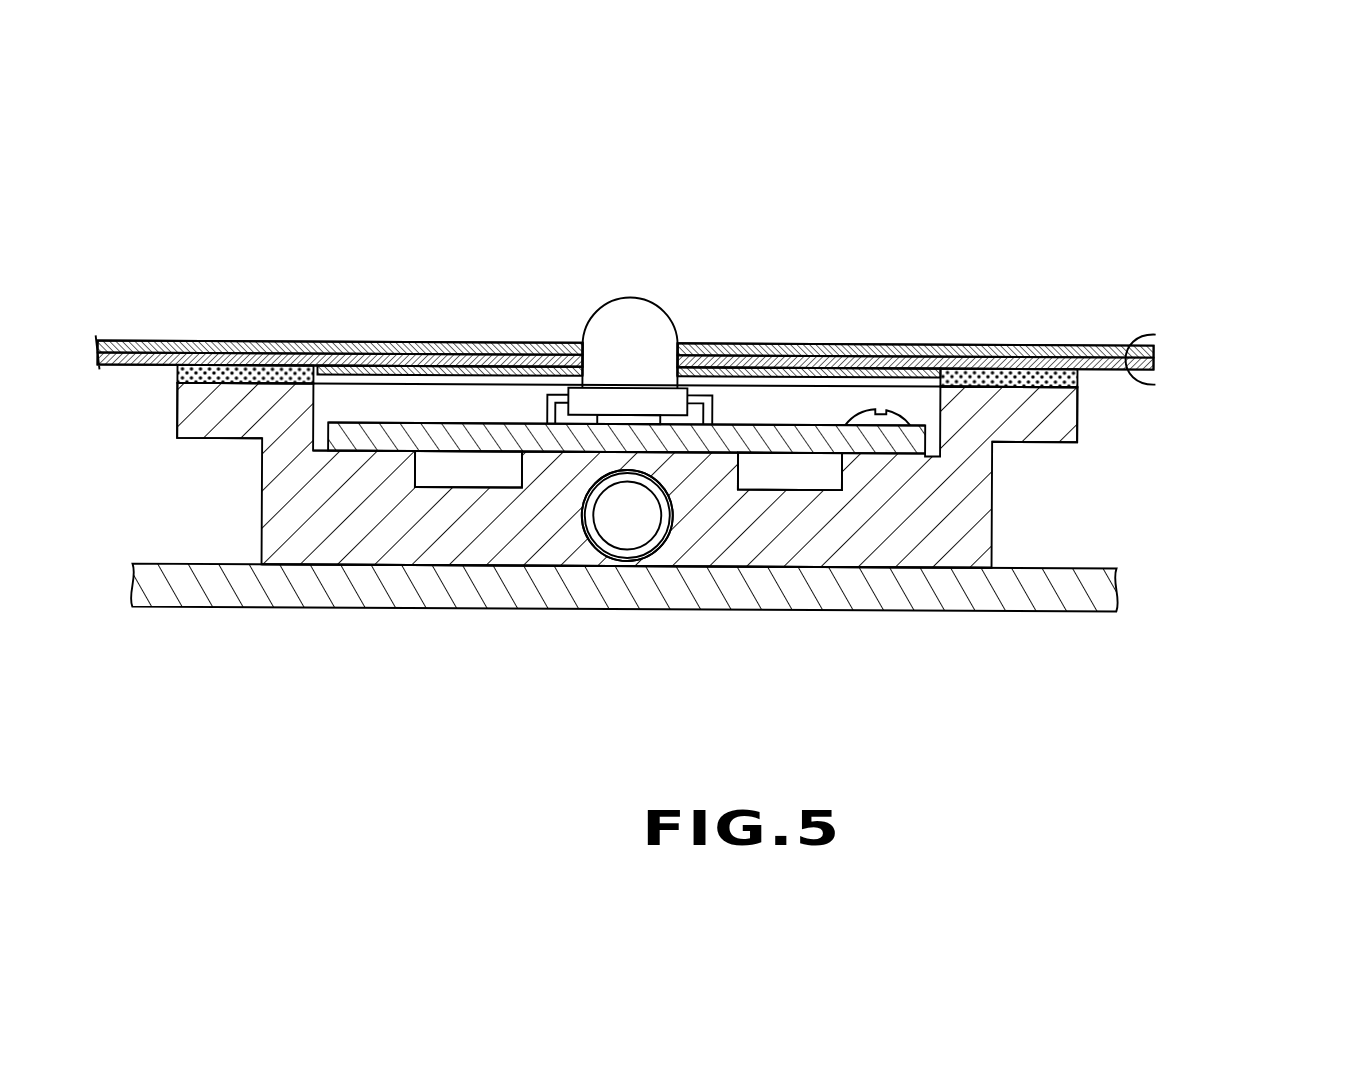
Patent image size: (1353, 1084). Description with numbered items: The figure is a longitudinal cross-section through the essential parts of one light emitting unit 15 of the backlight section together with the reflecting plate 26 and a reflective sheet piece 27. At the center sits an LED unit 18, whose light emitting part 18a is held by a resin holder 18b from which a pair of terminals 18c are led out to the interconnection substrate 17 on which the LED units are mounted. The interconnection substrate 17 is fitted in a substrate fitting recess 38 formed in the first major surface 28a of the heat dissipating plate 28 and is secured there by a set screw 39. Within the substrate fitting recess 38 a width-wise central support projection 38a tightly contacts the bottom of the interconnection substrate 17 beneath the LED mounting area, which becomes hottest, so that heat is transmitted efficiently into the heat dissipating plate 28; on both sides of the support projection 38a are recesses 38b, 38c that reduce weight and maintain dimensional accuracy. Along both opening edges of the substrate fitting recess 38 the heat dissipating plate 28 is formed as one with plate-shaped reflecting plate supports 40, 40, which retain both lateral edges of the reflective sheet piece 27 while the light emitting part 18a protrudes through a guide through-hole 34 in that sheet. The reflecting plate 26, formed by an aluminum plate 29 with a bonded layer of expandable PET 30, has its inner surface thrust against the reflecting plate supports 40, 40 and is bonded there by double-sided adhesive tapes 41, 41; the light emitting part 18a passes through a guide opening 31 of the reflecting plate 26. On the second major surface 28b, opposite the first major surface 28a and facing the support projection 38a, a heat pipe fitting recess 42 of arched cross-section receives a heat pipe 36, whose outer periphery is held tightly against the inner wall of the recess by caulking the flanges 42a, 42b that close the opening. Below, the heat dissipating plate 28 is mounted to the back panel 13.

The back panel 13 is at (190, 587).
The light emitting unit 15 is at (433, 401).
The interconnection substrate 17 is at (362, 437).
The LED unit 18 is at (447, 218).
The light emitting part 18a is at (640, 313).
The resin holder 18b is at (583, 402).
The terminals 18c is at (547, 410).
The reflecting plate 26 is at (715, 350).
The reflective sheet piece 27 is at (818, 358).
The heat dissipating plate 28 is at (967, 520).
The first major surface 28a is at (963, 384).
The second major surface 28b is at (955, 568).
The plate 29 is at (674, 372).
The layer of expandable PET 30 is at (1160, 336).
The guide openings 31 is at (680, 343).
The guide through-holes 34 is at (728, 345).
The heat pipe 36 is at (627, 561).
The substrate fitting recess 38 is at (328, 430).
The support projection 38a is at (567, 455).
The recess 38b is at (416, 457).
The recess 38c is at (835, 472).
The set screw 39 is at (885, 407).
The reflecting plate support 40 is at (190, 408).
The double-sided adhesive tape 41 is at (1037, 375).
The heat pipe fitting recess 42 is at (632, 564).
The caulked flange 42a is at (600, 561).
The caulked flange 42b is at (670, 527).